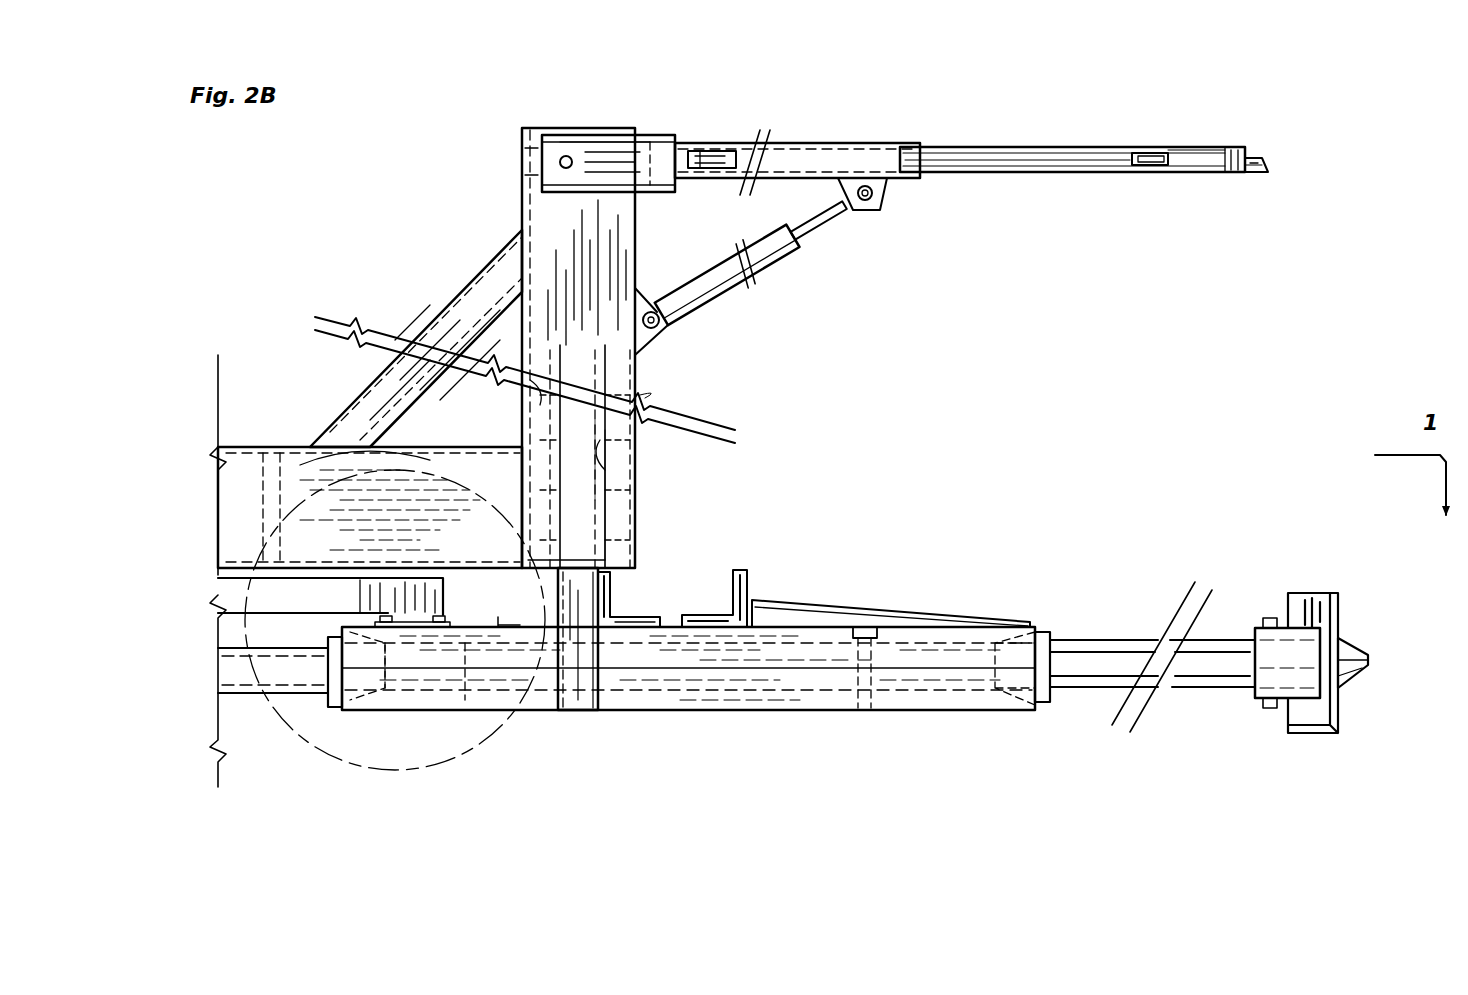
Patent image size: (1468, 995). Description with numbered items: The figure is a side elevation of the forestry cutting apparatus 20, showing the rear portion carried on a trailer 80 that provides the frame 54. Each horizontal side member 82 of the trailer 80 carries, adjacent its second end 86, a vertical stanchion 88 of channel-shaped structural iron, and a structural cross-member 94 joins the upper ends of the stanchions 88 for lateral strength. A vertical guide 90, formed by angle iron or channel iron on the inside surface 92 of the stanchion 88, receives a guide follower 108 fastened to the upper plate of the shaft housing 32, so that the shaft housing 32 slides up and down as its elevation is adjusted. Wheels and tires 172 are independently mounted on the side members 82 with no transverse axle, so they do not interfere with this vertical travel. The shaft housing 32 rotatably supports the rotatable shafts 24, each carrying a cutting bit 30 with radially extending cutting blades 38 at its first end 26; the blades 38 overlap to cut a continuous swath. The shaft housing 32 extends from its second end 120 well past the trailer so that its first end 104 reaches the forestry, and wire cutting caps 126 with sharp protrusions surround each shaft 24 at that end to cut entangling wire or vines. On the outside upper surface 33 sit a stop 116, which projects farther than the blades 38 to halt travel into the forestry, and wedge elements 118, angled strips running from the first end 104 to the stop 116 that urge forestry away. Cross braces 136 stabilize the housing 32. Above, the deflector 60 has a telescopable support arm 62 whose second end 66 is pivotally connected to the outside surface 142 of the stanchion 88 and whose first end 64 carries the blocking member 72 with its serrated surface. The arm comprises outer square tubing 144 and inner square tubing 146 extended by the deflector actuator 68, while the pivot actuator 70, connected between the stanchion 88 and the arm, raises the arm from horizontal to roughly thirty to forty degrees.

The apparatus 20 is at (493, 123).
The rotatable shaft 24 is at (1118, 655).
The first end of shaft 26 is at (1232, 668).
The cutting bit 30 is at (1360, 605).
The shaft housing 32 is at (735, 690).
The outside upper surface 33 is at (672, 615).
The cutting blade 38 is at (1300, 592).
The frame 54 is at (415, 308).
The deflector 60 is at (892, 228).
The telescopable support arm 62 is at (1075, 147).
The first end of support arm 64 is at (1198, 150).
The second end of support arm 66 is at (640, 135).
The deflector actuator 68 is at (850, 170).
The pivot actuator 70 is at (725, 290).
The blocking member 72 is at (1245, 173).
The trailer 80 is at (210, 466).
The horizontal side member 82 is at (242, 465).
The second end of side member 86 is at (640, 512).
The vertical stanchion 88 is at (540, 208).
The vertical guide 90 is at (640, 430).
The inside surface of stanchion 92 is at (640, 362).
The structural cross-member 94 is at (580, 124).
The first end of shaft housing 104 is at (1043, 630).
The guide follower 108 is at (580, 700).
The stop 116 is at (747, 572).
The wedge element 118 is at (850, 612).
The second end of shaft housing 120 is at (336, 705).
The wire cutting cap 126 is at (1043, 702).
The cross brace 136 is at (275, 596).
The outside surface of stanchion 142 is at (595, 203).
The outer square tubing 144 is at (798, 142).
The inner square tubing 146 is at (1066, 173).
The wheels and tires 172 is at (462, 756).